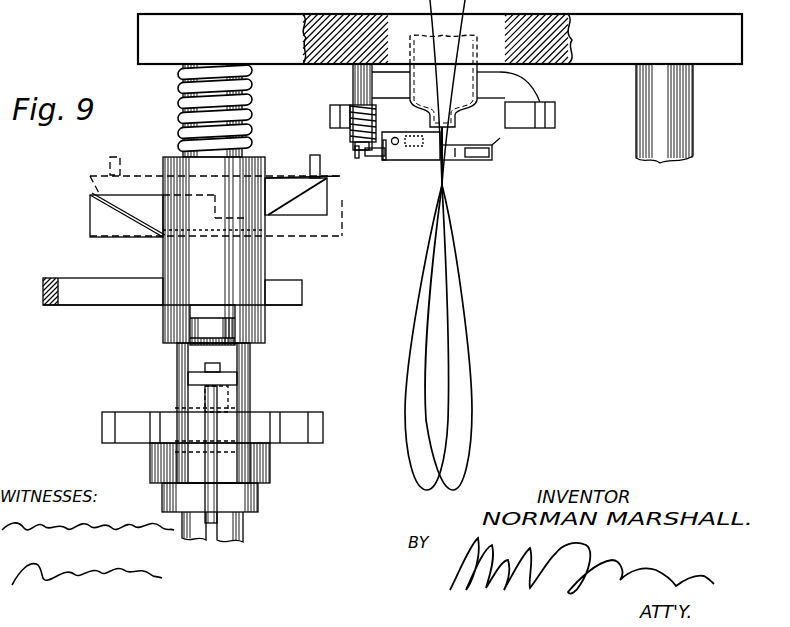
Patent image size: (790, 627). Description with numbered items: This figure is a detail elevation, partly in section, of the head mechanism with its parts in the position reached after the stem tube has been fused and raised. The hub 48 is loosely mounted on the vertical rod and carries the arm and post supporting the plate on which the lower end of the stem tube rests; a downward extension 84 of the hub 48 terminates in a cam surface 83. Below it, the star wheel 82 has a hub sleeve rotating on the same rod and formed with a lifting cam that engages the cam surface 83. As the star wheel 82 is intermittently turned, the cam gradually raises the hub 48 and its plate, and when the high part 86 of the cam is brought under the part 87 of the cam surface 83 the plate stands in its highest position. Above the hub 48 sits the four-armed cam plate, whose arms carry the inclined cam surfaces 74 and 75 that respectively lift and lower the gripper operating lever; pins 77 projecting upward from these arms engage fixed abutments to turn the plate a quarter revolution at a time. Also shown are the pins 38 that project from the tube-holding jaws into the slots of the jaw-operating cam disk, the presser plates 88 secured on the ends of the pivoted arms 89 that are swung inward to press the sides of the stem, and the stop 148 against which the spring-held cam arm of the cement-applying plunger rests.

The pins 38 is at (356, 132).
The hub 48 is at (163, 258).
The inclined cam surface 74 is at (97, 215).
The inclined cam surface 75 is at (330, 191).
The pins 77 is at (310, 164).
The star wheel 82 is at (112, 421).
The cam surface 83 is at (187, 402).
The extension 84 is at (177, 362).
The high part 86 is at (227, 380).
The part of the cam surface 87 is at (230, 401).
The presser plates 88 is at (338, 118).
The arms 89 is at (385, 90).
The stop 148 is at (440, 120).